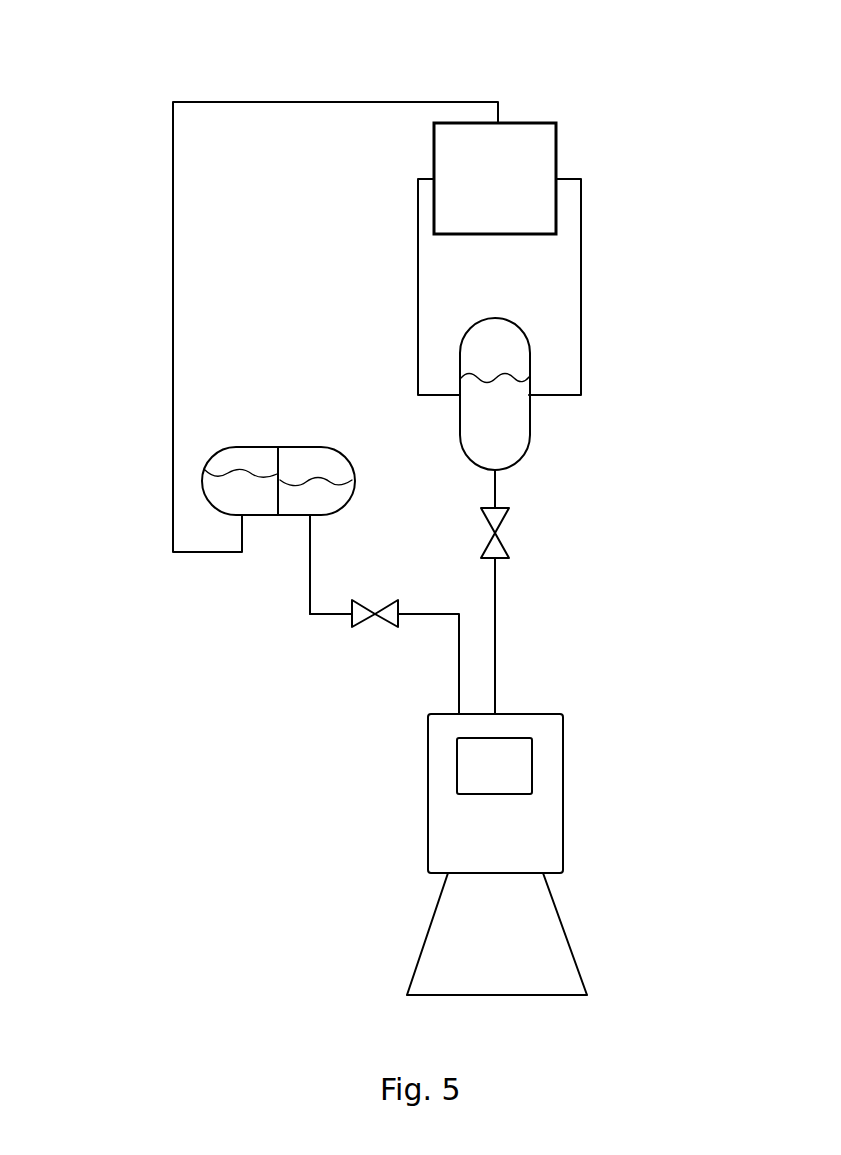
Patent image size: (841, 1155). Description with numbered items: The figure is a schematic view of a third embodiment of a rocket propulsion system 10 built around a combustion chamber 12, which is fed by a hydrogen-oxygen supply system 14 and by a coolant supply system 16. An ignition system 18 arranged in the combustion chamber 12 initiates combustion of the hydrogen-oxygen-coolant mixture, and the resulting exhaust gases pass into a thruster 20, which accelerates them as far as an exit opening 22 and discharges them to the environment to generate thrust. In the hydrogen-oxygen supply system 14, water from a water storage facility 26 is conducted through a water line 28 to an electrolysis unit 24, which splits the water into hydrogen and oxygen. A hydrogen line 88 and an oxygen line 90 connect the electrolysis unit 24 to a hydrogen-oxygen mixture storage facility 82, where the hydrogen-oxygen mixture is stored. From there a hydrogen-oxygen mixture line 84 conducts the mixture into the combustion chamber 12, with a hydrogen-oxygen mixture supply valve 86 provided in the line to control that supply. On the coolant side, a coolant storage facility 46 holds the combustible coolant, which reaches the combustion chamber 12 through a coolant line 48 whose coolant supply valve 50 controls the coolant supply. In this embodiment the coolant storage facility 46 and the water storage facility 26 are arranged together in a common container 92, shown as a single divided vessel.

The rocket propulsion system 10 is at (88, 61).
The combustion chamber 12 is at (563, 758).
The hydrogen-oxygen supply system 14 is at (657, 313).
The coolant supply system 16 is at (228, 627).
The ignition system 18 is at (508, 755).
The thruster 20 is at (542, 957).
The exit opening 22 is at (520, 995).
The electrolysis unit 24 is at (539, 160).
The water storage facility 26 is at (230, 497).
The water line 28 is at (173, 368).
The coolant storage facility 46 is at (312, 503).
The coolant line 48 is at (339, 617).
The coolant supply valve 50 is at (393, 628).
The hydrogen-oxygen mixture storage facility 82 is at (510, 442).
The hydrogen-oxygen mixture line 84 is at (495, 625).
The hydrogen-oxygen mixture supply valve 86 is at (505, 523).
The hydrogen line 88 is at (418, 278).
The oxygen line 90 is at (581, 243).
The common container 92 is at (307, 447).